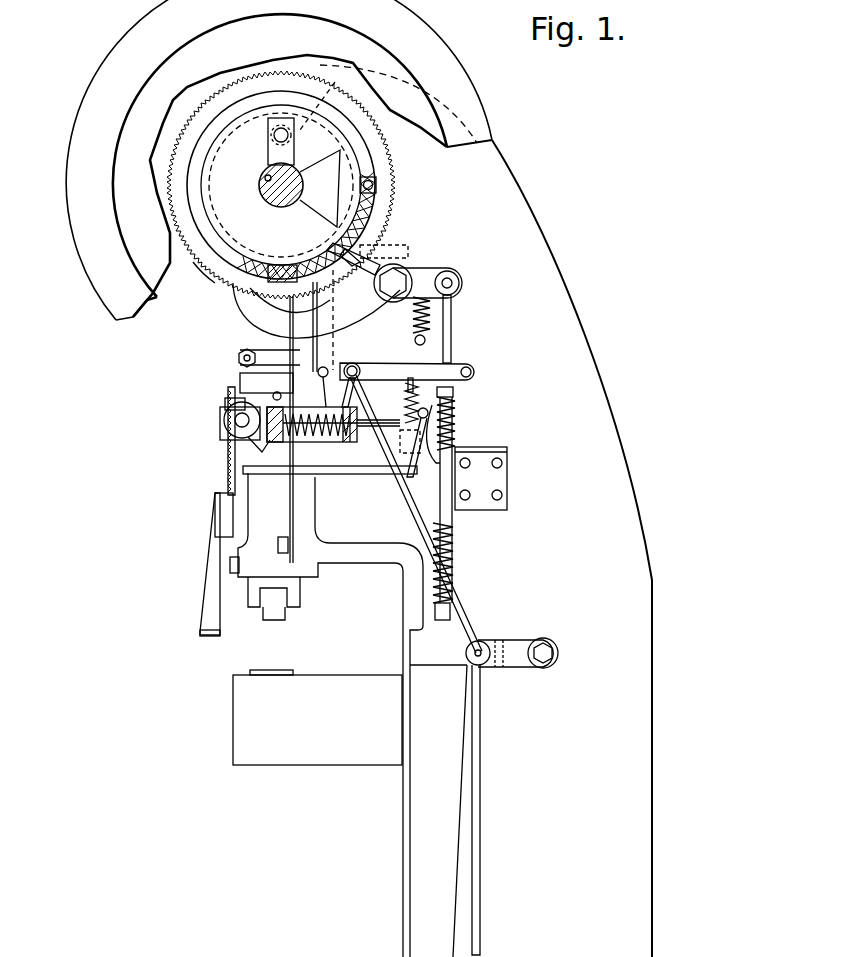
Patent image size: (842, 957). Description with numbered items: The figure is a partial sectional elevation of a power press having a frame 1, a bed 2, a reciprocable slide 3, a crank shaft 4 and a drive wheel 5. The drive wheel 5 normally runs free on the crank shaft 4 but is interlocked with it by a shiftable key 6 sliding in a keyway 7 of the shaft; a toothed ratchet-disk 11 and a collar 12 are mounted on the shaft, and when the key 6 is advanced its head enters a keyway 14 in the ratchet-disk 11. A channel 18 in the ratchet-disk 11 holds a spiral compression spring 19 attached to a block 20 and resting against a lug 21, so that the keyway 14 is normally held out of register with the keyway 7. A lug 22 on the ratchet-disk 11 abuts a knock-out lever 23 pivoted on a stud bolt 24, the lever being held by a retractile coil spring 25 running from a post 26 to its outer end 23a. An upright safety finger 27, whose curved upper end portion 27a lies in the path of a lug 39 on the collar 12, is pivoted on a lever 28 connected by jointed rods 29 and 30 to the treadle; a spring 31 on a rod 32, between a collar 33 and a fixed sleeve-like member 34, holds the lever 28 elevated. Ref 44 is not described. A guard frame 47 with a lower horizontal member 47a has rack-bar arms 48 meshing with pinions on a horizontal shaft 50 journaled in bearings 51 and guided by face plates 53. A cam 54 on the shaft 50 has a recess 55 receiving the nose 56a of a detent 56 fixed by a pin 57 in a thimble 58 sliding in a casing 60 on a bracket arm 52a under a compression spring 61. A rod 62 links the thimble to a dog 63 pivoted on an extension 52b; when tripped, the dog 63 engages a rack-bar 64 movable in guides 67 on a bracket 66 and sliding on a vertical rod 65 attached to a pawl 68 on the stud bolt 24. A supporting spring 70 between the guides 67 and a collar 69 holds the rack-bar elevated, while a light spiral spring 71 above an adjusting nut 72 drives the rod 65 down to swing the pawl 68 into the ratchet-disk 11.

The frame 1 is at (632, 503).
The bed 2 is at (240, 700).
The reciprocable slide 3 is at (255, 520).
The crank shaft 4 is at (258, 186).
The drive wheel 5 is at (75, 160).
The key 6 is at (268, 149).
The keyway 7 is at (265, 177).
The ratchet-disk 11 is at (370, 210).
The collar 12 is at (298, 74).
The keyway 14 is at (318, 210).
The channel 18 is at (358, 143).
The spiral compression spring 19 is at (358, 237).
The block 20 is at (378, 181).
The lug 21 is at (265, 280).
The lug 22 is at (201, 284).
The knock-out lever 23 is at (365, 260).
The outer end of lever 23a is at (450, 264).
The stud bolt 24 is at (393, 302).
The retractile coil spring 25 is at (432, 315).
The stud or post 26 is at (414, 340).
The safety finger 27 is at (322, 346).
The upper end portion of finger 27a is at (405, 247).
The lever 28 is at (462, 368).
The jointed rod 29 is at (483, 640).
The jointed rod 30 is at (481, 835).
The spring 31 is at (405, 400).
The rod 32 is at (402, 486).
The collar 33 is at (408, 388).
The sleeve-like member 34 is at (456, 425).
The lug 39 is at (352, 158).
The flange 44 is at (380, 193).
The frame 47 is at (210, 584).
The lower horizontal member 47a is at (205, 636).
The arms 48 is at (228, 478).
The horizontal shaft 50 is at (224, 421).
The bearings 51 is at (222, 405).
The bracket arm 52a is at (350, 475).
The extension 52b is at (428, 413).
The face plates 53 is at (222, 437).
The cam 54 is at (240, 446).
The recess 55 is at (277, 442).
The detent 56 is at (305, 437).
The nose 56a is at (239, 358).
The pin 57 is at (282, 405).
The thimble 58 is at (332, 442).
The casing 60 is at (330, 405).
The compression spring 61 is at (350, 404).
The rod 62 is at (378, 430).
The dog 63 is at (412, 453).
The rack-bar 64 is at (438, 465).
The vertical rod 65 is at (452, 338).
The bracket 66 is at (508, 485).
The guides 67 is at (503, 463).
The pawl 68 is at (252, 322).
The collar 69 is at (454, 392).
The supporting spring 70 is at (453, 437).
The spiral spring 71 is at (455, 548).
The adjusting nut 72 is at (433, 607).